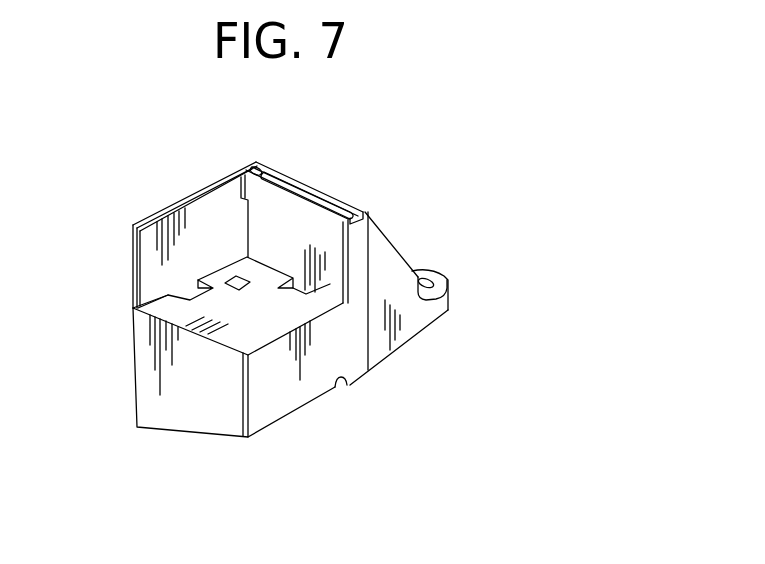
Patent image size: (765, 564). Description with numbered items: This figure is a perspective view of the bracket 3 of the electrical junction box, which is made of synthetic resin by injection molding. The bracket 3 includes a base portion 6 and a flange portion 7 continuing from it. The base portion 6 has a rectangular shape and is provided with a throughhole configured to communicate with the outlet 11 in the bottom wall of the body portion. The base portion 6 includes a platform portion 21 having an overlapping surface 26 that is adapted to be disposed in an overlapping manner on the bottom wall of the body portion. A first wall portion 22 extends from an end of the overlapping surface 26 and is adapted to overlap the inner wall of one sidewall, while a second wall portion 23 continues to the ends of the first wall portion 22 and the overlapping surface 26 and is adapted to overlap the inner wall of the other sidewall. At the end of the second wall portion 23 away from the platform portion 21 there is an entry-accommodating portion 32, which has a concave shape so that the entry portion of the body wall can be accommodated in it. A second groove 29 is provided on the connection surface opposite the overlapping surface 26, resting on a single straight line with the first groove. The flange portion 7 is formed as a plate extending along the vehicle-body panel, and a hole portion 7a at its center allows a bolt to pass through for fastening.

The bracket 3 is at (412, 200).
The base portion 6 is at (557, 457).
The flange portion 7 is at (424, 322).
The hole portion 7a is at (437, 277).
The outlet 11 is at (240, 290).
The platform portion 21 is at (163, 347).
The first wall portion 22 is at (190, 217).
The second wall portion 23 is at (305, 232).
The overlapping surface 26 is at (237, 333).
The second groove 29 is at (347, 387).
The entry-accommodating portion 32 is at (278, 178).